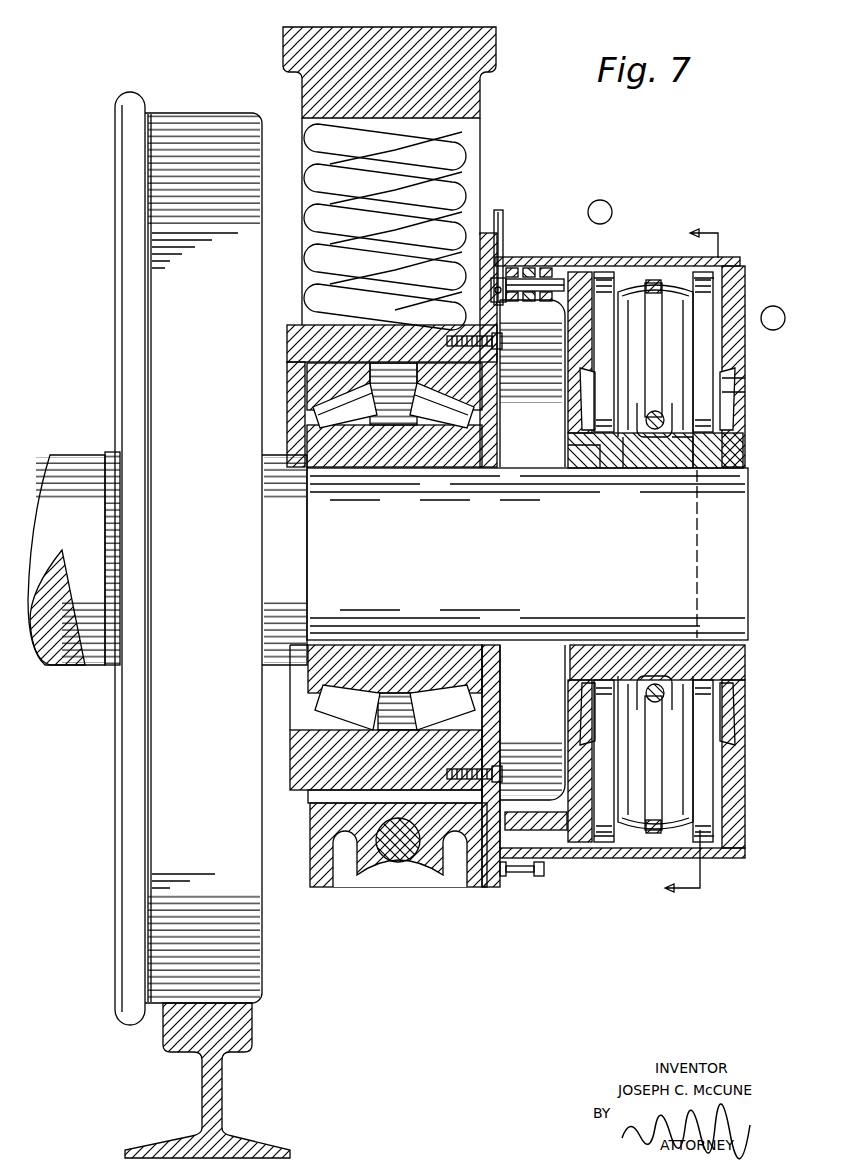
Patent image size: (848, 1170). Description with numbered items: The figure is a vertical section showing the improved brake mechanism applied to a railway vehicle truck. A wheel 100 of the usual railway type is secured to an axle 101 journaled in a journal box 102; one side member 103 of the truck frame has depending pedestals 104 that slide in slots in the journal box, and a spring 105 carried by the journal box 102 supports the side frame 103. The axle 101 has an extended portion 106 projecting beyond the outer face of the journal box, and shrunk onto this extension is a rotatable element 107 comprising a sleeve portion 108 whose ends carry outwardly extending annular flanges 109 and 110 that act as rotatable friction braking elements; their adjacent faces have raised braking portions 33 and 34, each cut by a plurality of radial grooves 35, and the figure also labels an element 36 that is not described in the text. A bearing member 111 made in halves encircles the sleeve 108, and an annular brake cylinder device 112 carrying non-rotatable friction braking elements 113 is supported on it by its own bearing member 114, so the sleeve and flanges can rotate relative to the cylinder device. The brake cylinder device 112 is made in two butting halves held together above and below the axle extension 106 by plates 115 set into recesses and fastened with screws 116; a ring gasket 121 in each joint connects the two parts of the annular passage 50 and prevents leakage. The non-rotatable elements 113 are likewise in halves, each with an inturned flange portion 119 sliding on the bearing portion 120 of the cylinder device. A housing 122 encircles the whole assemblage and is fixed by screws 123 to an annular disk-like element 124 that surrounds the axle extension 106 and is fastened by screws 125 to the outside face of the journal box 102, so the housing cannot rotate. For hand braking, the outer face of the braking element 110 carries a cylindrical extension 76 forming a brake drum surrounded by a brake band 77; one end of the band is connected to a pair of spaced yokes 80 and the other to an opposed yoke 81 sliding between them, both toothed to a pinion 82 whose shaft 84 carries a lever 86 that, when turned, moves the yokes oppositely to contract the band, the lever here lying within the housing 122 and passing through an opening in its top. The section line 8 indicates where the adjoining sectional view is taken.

The section line 8— 8 is at (680, 560).
The raised braking portion 33 is at (740, 384).
The raised braking portion 34 is at (590, 385).
The radial grooves 35 is at (588, 270).
The wedge segment 36 is at (580, 415).
The annular passage 50 is at (650, 412).
The cylindrical extension 76 is at (417, 848).
The brake band 77 is at (493, 880).
The yokes 80 is at (514, 268).
The yoke 81 is at (535, 279).
The pinion 82 is at (545, 270).
The shaft 84 is at (495, 288).
The lever 86 is at (504, 212).
The wheel 100 is at (120, 254).
The axle 101 is at (305, 562).
The journal box 102 is at (287, 372).
The side member of truck frame 103 is at (417, 27).
The pedestals 104 is at (312, 805).
The spring 105 is at (322, 170).
The extended portion of axle 106 is at (740, 556).
The rotatable element 107 is at (745, 660).
The sleeve portion 108 is at (598, 460).
The annular flange 109 is at (742, 358).
The annular flange 110 is at (568, 355).
The bearing member 111 is at (636, 460).
The annular brake cylinder device 112 is at (640, 830).
The non-rotatable friction braking elements 113 is at (610, 275).
The bearing member 114 is at (570, 672).
The plates 115 is at (652, 280).
The screws 116 is at (657, 283).
The inturned flange portion 119 is at (678, 460).
The bearing portion 120 is at (655, 450).
The ring gasket 121 is at (670, 412).
The housing 122 is at (592, 848).
The screws 123 is at (517, 872).
The annular disk-like element 124 is at (515, 882).
The screws 125 is at (462, 338).